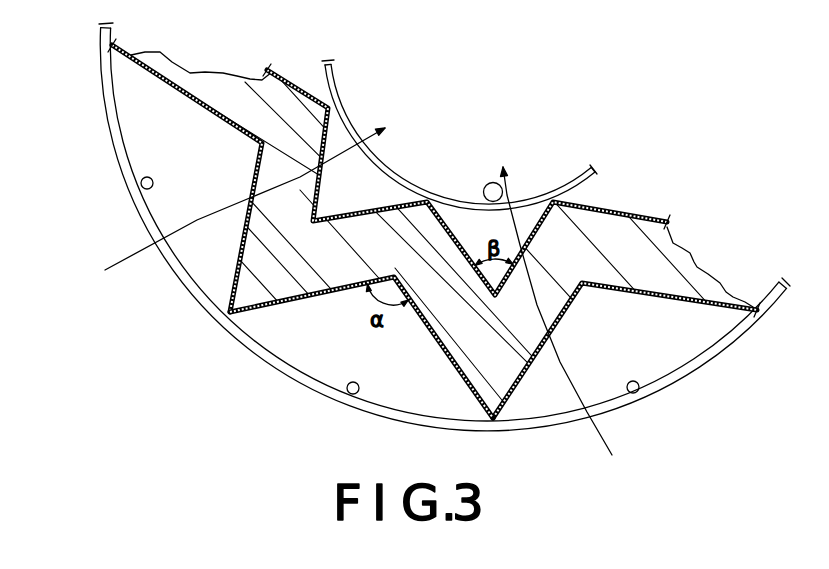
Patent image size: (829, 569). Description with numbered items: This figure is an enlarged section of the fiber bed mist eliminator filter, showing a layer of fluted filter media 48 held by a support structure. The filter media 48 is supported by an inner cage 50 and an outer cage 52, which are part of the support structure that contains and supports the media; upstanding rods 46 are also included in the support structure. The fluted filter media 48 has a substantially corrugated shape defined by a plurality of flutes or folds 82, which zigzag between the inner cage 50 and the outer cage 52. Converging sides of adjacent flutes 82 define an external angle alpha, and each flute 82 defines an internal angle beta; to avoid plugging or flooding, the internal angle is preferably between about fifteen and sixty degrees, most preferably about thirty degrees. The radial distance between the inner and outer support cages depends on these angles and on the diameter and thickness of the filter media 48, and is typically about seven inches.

The upstanding rods 46 is at (486, 166).
The fluted filter media 48 is at (450, 284).
The inner cage 50 is at (459, 122).
The outer cage 52 is at (433, 227).
The flutes 82 is at (361, 347).